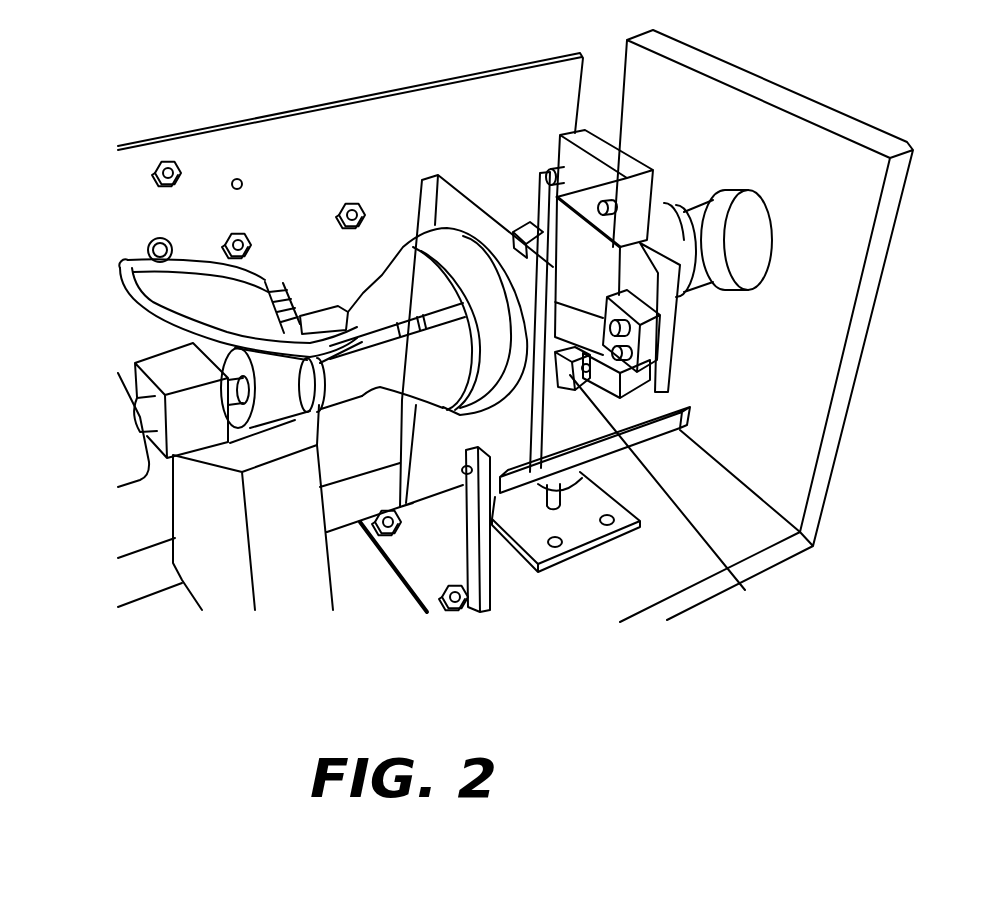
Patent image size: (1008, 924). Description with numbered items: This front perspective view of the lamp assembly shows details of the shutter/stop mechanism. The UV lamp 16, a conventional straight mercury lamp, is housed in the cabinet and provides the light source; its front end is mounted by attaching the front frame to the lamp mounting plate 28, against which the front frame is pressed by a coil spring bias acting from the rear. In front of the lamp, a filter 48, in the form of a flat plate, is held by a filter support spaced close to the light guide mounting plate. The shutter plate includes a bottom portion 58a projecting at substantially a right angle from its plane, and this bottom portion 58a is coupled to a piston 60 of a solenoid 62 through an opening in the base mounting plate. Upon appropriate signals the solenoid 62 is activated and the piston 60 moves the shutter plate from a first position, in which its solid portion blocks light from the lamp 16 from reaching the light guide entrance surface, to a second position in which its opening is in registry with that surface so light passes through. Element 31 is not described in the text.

The UV lamp 16 is at (397, 278).
The lamp mounting plate 28 is at (440, 174).
The hose 31 is at (122, 264).
The filter 48 is at (538, 188).
The bottom portion 58a is at (737, 582).
The piston 60 is at (553, 508).
The solenoid 62 is at (572, 473).